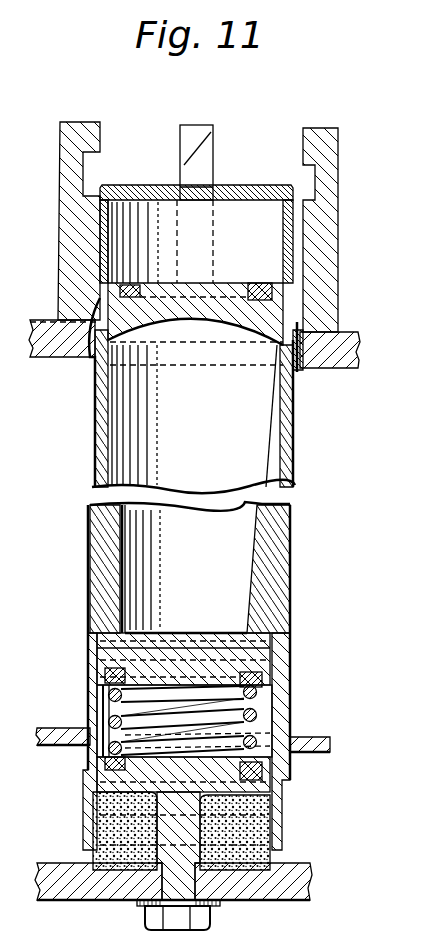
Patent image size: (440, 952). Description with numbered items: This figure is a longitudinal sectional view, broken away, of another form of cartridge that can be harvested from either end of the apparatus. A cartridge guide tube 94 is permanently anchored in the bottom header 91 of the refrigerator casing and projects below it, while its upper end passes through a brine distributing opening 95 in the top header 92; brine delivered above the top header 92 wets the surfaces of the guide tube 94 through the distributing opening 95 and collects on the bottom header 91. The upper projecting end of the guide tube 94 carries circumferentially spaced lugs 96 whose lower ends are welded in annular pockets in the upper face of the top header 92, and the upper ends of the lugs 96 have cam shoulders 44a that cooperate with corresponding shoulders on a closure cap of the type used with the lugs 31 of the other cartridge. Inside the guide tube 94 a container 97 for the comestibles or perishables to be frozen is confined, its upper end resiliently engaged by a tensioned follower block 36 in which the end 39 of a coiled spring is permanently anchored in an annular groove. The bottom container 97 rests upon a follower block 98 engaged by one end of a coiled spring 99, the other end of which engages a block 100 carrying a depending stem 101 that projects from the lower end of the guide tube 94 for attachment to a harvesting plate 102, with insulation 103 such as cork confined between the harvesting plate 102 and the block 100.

The lugs 31 is at (64, 286).
The lugs 96 is at (310, 206).
The top header 92 is at (350, 349).
The brine distributing openings 95 is at (303, 356).
The cam shoulders 44a is at (194, 152).
The follower block 36 is at (218, 288).
The end of coiled spring 39 is at (258, 286).
The cartridge guide tube 94 is at (94, 470).
The container 97 is at (262, 606).
The insulation 103 is at (92, 851).
The follower block 98 is at (264, 650).
The coiled spring 99 is at (258, 716).
The bottom header 91 is at (318, 742).
The block 100 is at (272, 782).
The depending stem 101 is at (165, 822).
The harvesting plate 102 is at (57, 900).